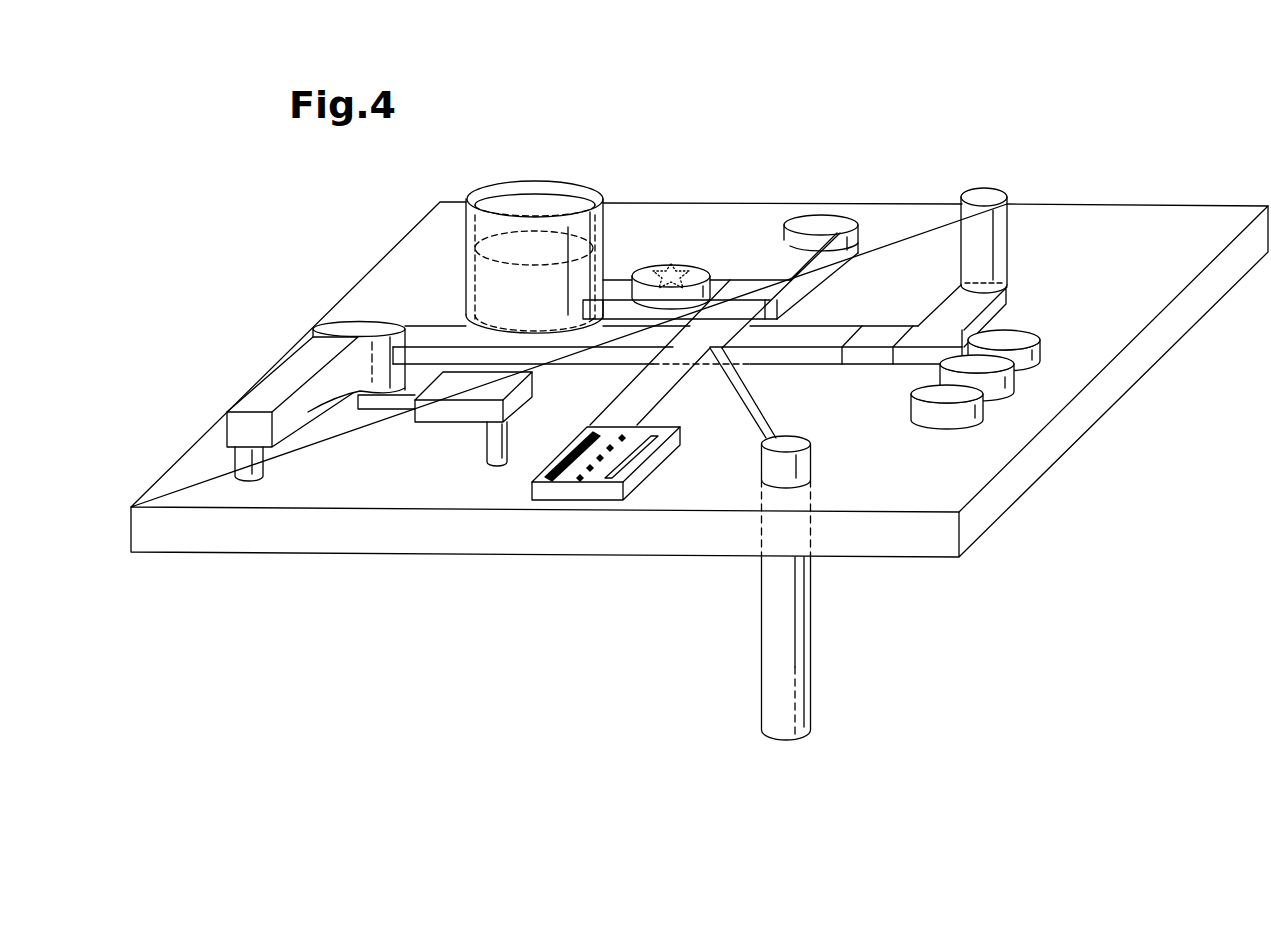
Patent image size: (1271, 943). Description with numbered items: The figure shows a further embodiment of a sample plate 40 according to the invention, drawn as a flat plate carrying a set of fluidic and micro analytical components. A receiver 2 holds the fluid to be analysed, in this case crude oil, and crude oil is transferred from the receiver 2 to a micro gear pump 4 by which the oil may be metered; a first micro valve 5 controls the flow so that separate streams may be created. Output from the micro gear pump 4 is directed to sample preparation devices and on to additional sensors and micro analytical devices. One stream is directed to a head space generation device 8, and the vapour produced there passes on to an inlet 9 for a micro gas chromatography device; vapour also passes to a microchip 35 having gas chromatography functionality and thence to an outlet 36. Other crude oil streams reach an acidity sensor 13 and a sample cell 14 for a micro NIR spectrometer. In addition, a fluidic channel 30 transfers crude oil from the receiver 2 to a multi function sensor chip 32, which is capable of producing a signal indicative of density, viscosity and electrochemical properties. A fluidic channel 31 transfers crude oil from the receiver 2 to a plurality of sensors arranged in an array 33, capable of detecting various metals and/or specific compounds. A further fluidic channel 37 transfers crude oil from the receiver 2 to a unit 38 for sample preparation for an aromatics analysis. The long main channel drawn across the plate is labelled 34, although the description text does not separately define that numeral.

The receiver 2 is at (535, 192).
The gear pump 4 is at (668, 264).
The first micro valve 5 is at (763, 290).
The head space generation device 8 is at (362, 327).
The inlet for a micro gas chromatography device 9 is at (240, 462).
The acidity sensor 13 is at (823, 210).
The sample cell for a micro NIR spectrometer 14 is at (985, 247).
The fluidic channel 30 is at (655, 390).
The fluidic channel 31 is at (910, 360).
The multi function sensor chip 32 is at (604, 527).
The array of sensors 33 is at (975, 409).
The main channel 34 is at (453, 333).
The microchip having gas chromatography functionality 35 is at (452, 410).
The outlet 36 is at (493, 440).
The fluidic channel 37 is at (750, 395).
The unit for sample preparation for an aromatics analysis 38 is at (787, 617).
The sample plate 40 is at (1075, 180).